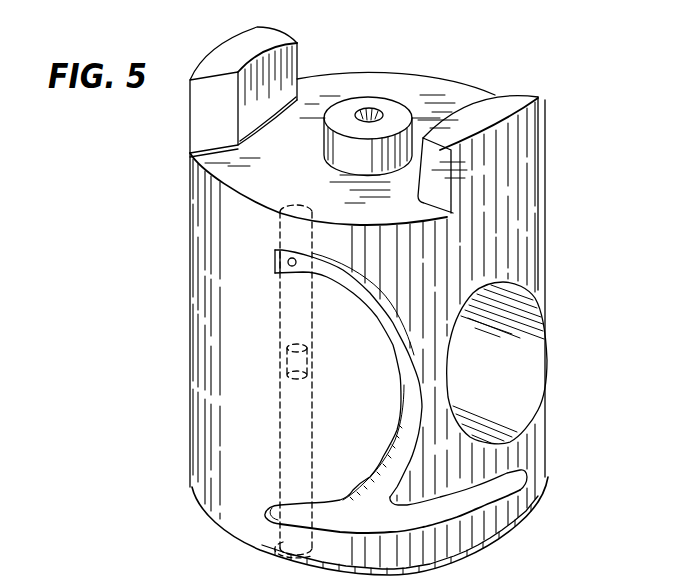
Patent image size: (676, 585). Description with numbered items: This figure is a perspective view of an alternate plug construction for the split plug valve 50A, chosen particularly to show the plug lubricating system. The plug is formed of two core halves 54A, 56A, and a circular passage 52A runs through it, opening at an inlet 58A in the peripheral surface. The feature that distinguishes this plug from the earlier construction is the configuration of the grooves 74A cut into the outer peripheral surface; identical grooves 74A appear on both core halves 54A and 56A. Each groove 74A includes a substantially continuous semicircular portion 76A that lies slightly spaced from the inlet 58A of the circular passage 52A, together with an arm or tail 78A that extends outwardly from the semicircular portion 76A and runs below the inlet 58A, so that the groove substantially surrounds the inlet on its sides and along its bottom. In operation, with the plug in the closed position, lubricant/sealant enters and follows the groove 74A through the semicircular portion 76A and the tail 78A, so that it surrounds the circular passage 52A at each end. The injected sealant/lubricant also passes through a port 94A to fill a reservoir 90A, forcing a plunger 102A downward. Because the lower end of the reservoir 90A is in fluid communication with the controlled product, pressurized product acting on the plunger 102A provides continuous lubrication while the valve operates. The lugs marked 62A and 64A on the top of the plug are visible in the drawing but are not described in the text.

The split plug valve 50A is at (552, 235).
The circular passage 52A is at (523, 347).
The core half 54A is at (530, 177).
The core half 56A is at (472, 52).
The inlet 58A is at (450, 360).
The lug 62A is at (242, 47).
The lug 64A is at (503, 120).
The groove 74A is at (385, 302).
The semicircular portion 76A is at (398, 345).
The arm or tail 78A is at (438, 496).
The reservoir 90A is at (290, 557).
The port 94A is at (297, 264).
The plunger 102A is at (303, 348).